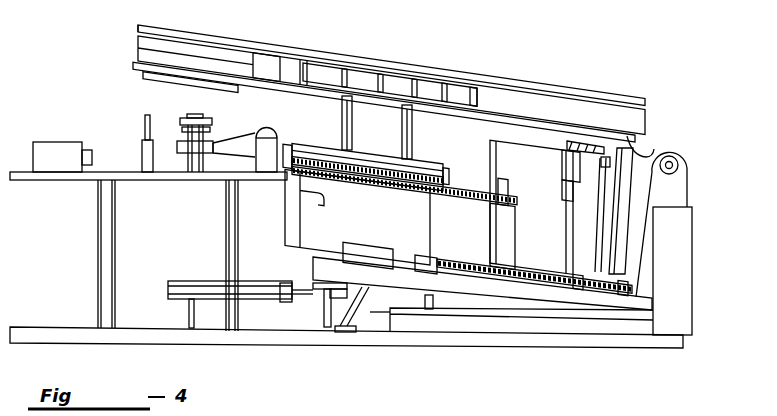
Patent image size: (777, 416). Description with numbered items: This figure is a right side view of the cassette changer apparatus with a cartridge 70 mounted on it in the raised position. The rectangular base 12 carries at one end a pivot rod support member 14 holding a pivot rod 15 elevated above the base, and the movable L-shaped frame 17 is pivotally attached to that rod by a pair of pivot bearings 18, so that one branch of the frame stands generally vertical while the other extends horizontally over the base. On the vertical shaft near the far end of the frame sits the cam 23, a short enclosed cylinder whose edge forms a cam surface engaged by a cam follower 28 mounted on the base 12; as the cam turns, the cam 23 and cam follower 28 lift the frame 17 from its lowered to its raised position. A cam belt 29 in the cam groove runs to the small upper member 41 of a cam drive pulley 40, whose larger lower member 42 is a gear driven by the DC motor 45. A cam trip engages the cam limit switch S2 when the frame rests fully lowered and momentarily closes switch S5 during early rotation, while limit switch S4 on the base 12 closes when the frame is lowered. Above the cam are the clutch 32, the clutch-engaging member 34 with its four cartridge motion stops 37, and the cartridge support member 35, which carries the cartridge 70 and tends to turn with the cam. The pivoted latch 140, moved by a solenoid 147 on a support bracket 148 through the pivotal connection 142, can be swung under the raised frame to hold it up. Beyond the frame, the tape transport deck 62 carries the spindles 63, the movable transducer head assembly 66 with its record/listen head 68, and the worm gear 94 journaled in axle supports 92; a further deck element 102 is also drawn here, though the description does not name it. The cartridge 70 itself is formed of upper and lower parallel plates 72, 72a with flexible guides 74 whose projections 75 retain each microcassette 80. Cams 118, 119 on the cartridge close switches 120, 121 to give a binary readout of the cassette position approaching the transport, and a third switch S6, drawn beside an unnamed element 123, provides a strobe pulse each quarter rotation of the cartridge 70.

The base 12 is at (77, 327).
The pivot rod support member 14 is at (683, 226).
The pivot rod 15 is at (669, 160).
The movable L-shaped frame 17 is at (548, 300).
The pivot bearings 18 is at (680, 157).
The cam 23 is at (340, 236).
The cam follower 28 is at (428, 306).
The cam belt 29 is at (310, 197).
The clutch 32 is at (418, 175).
The clutch-engaging member 34 is at (320, 147).
The cartridge support member 35 is at (388, 138).
The cartridge motion stops 37 is at (468, 165).
The cam drive pulley 40 is at (475, 237).
The upper member of the pulley 41 is at (514, 192).
The lower member of the pulley 42 is at (551, 253).
The DC motor 45 is at (557, 178).
The tape transport deck 62 is at (131, 172).
The spindles 63 is at (192, 114).
The movable transducer head assembly 66 is at (60, 145).
The record/listen head 68 is at (96, 150).
The cartridge 70 is at (525, 70).
The upper parallel plate 72 is at (624, 98).
The lower parallel plate 72a is at (145, 66).
The flexible guides 74 is at (188, 53).
The projection 75 is at (322, 68).
The microcassette 80 is at (395, 86).
The axle supports 92 is at (278, 155).
The worm gear 94 is at (266, 129).
The nozzle 102 is at (238, 143).
The cam 118 is at (142, 81).
The cam 119 is at (533, 135).
The switch 120 is at (640, 297).
The switch 121 is at (570, 236).
The rod 123 is at (601, 186).
The pivoted latch 140 is at (312, 286).
The pivotal connection 142 is at (323, 312).
The solenoid 147 is at (192, 282).
The support bracket 148 is at (192, 317).
The cam limit switch S2 is at (366, 248).
The limit switch S4 is at (342, 329).
The switch S5 is at (420, 272).
The third switch S6 is at (606, 166).